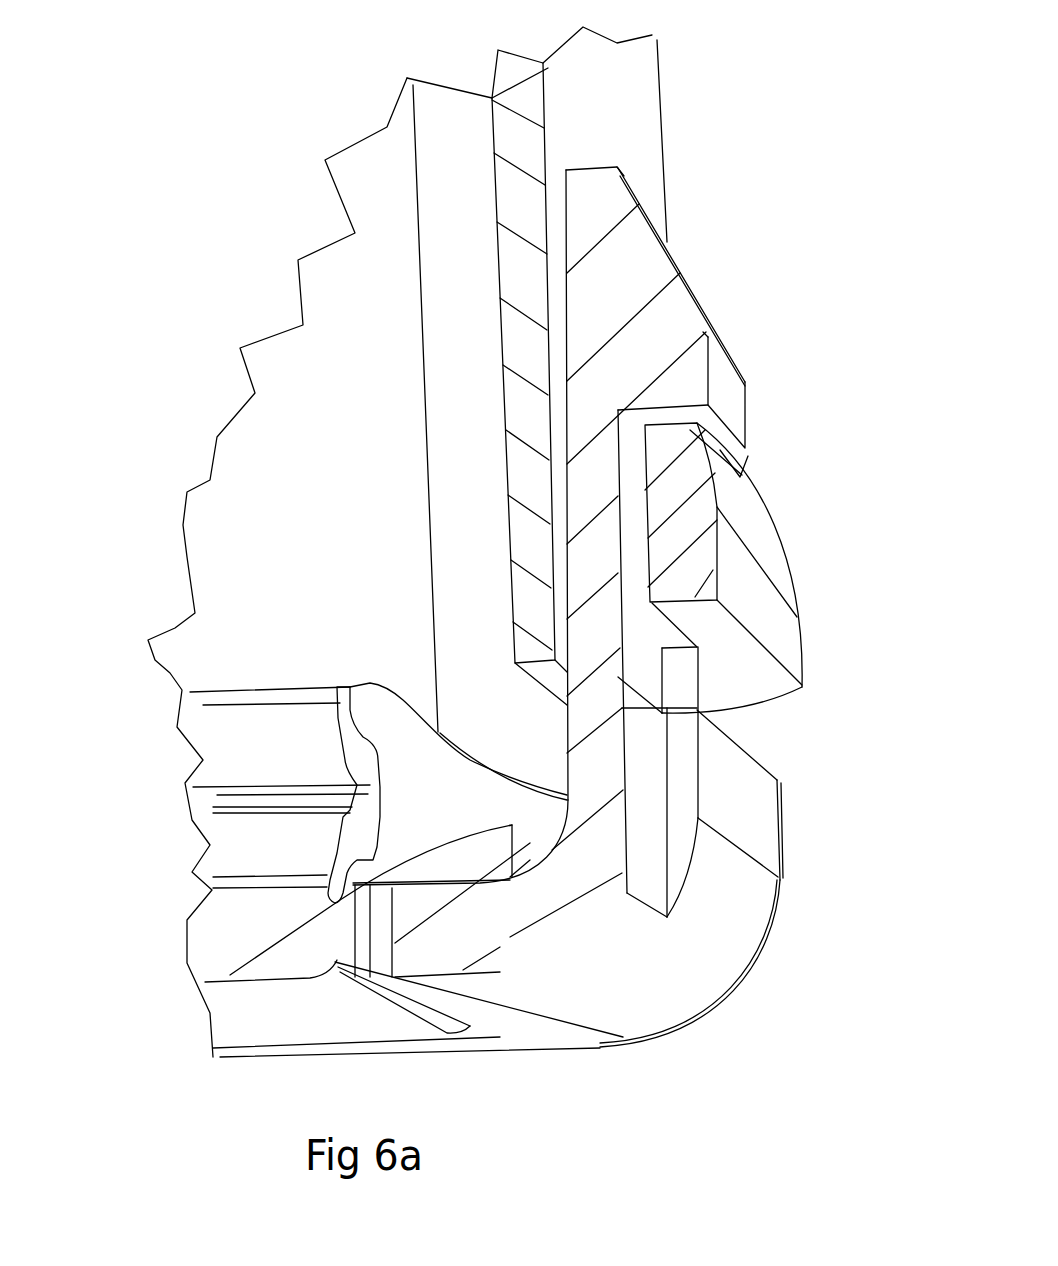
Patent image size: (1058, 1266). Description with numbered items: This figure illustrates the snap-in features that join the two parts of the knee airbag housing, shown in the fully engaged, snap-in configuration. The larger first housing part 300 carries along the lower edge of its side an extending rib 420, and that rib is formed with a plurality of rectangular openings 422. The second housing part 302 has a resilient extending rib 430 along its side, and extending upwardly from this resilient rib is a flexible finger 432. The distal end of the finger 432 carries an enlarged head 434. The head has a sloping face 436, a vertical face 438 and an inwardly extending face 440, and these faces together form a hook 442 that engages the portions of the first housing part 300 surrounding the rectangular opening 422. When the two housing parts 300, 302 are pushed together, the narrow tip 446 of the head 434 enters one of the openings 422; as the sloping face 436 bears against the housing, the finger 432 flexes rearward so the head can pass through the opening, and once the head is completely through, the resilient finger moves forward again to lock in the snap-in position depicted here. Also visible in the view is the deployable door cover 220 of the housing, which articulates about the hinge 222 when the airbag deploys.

The first housing part 300 is at (338, 383).
The hinge 222 is at (222, 803).
The door cover 220 is at (268, 1013).
The second housing part 302 is at (558, 1040).
The resilient extending rib 430 is at (717, 917).
The flexible finger 432 is at (637, 723).
The enlarged head 434 is at (674, 249).
The sloping face 436 is at (695, 300).
The narrow tip 446 is at (625, 173).
The vertical face 438 is at (722, 383).
The hook 442 is at (727, 345).
The inwardly extending face 440 is at (722, 455).
The extending rib 420 is at (763, 627).
The rectangular opening 422 is at (718, 507).